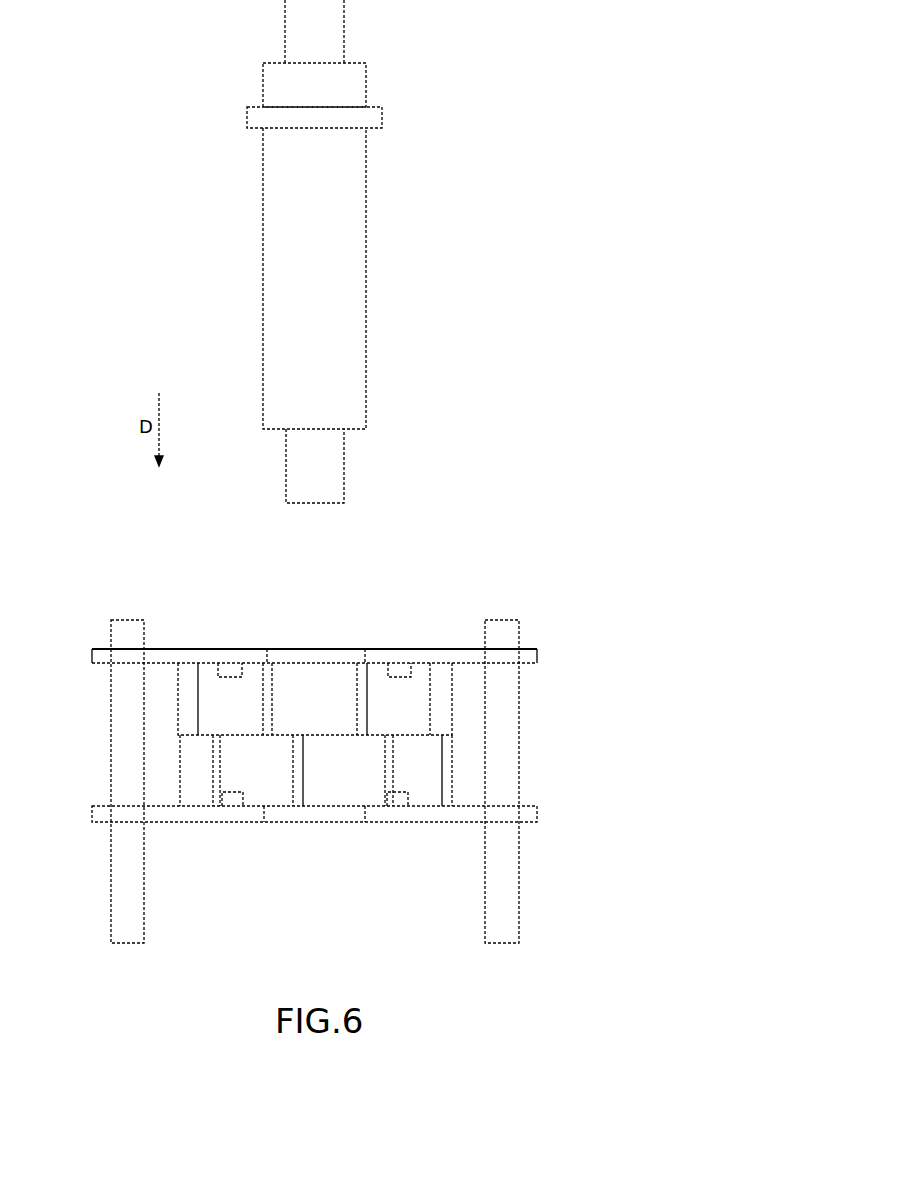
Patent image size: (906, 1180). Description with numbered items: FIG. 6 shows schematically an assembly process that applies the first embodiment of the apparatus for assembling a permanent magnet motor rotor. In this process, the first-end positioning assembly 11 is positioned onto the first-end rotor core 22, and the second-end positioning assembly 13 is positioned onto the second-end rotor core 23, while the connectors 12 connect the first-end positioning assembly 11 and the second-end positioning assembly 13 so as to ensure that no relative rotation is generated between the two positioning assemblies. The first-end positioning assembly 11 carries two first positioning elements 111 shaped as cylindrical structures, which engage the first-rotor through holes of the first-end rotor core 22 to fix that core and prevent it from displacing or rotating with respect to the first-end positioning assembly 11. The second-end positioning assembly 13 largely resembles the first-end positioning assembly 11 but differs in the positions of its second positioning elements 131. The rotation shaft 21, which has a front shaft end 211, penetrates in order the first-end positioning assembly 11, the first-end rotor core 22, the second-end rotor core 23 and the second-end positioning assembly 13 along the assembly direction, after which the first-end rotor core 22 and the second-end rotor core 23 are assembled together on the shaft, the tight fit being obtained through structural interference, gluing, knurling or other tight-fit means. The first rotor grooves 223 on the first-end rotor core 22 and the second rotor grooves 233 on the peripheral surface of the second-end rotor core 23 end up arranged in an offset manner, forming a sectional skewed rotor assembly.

The upper plate 11 is at (452, 660).
The upper plate recess 111 is at (398, 670).
The support post 12 is at (510, 705).
The lower plate 13 is at (460, 822).
The lower plate recess 131 is at (403, 808).
The press head 21 is at (357, 275).
The press head protrusion 211 is at (337, 468).
The upper mold block 22 is at (190, 700).
The upper mold block protrusion 223 is at (267, 670).
The lower mold block 23 is at (190, 766).
The lower mold block protrusion 233 is at (300, 808).